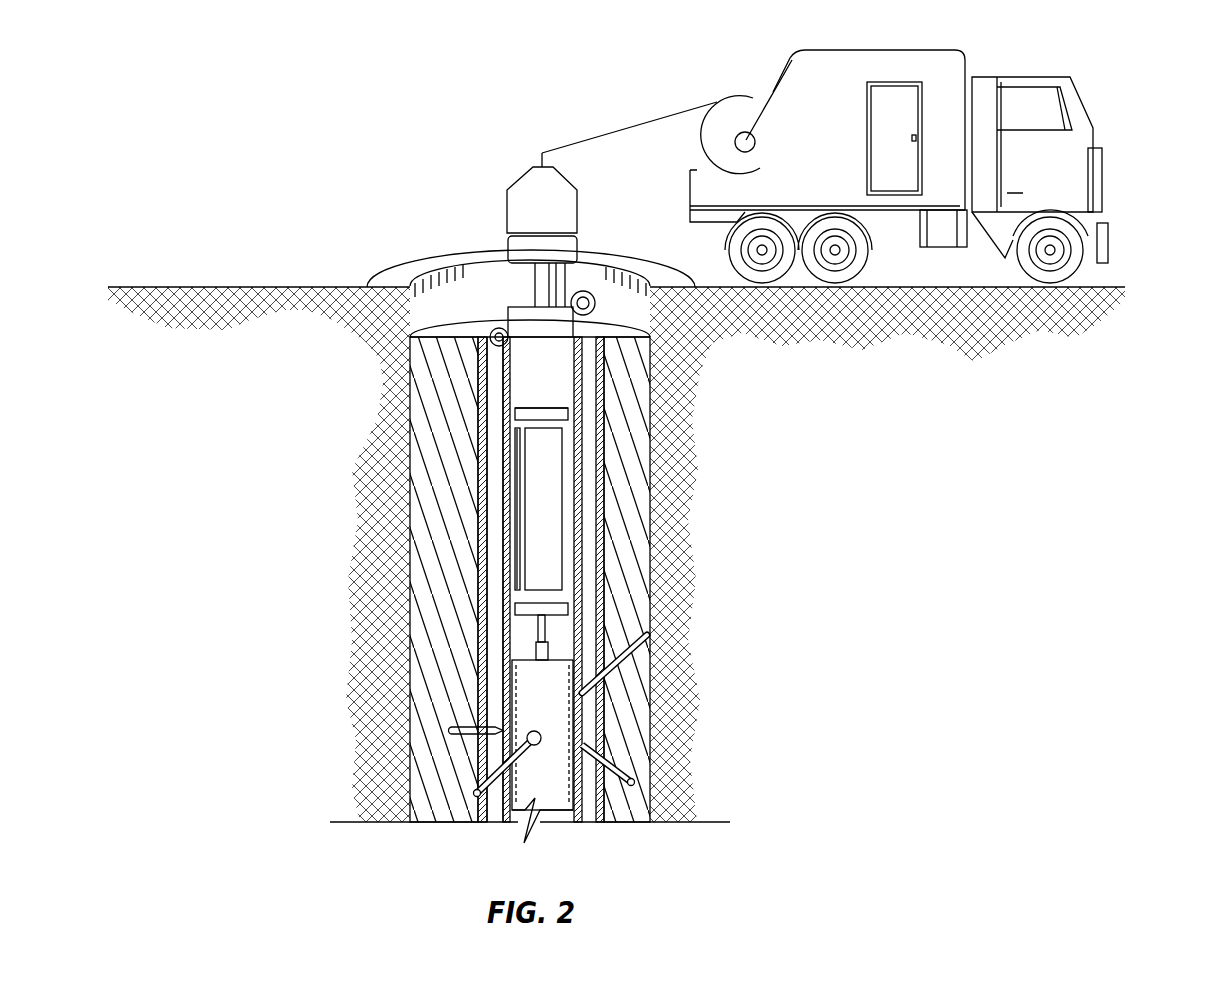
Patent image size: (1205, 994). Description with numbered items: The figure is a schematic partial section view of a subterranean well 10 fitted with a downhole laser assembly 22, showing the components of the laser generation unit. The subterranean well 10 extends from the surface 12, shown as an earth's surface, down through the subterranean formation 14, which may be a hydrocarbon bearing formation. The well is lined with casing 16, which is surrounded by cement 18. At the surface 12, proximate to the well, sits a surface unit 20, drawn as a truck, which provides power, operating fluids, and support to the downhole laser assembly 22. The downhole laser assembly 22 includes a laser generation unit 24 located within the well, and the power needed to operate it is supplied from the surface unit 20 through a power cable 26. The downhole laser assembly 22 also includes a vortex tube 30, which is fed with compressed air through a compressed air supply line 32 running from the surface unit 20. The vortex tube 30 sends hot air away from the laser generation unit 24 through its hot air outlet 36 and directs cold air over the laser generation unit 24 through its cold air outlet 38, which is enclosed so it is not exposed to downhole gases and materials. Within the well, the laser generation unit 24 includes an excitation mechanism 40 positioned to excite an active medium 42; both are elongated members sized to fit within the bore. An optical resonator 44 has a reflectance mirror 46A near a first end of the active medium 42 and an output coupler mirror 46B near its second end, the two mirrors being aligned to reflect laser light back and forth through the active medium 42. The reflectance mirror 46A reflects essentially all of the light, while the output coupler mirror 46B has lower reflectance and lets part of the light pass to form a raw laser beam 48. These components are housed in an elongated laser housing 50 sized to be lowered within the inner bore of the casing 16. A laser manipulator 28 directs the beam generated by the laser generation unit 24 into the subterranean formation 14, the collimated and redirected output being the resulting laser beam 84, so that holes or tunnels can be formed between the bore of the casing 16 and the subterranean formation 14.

The subterranean well 10 is at (408, 750).
The surface 12 is at (260, 287).
The subterranean formation 14 is at (975, 362).
The casing 16 is at (607, 603).
The cement 18 is at (650, 575).
The surface unit 20 is at (1057, 76).
The downhole laser assembly 22 is at (493, 652).
The laser generation unit 24 is at (582, 512).
The power cable 26 is at (515, 273).
The laser manipulator 28 is at (520, 718).
The vortex tube 30 is at (578, 326).
The compressed air supply line 32 is at (535, 276).
The hot air outlet 36 is at (596, 300).
The cold air outlet 38 is at (487, 329).
The excitation mechanism 40 is at (518, 521).
The active medium 42 is at (550, 560).
The optical resonator 44 is at (570, 415).
The reflectance mirror 46A is at (525, 409).
The output coupler mirror 46B is at (516, 608).
The raw laser beam 48 is at (615, 655).
The laser housing 50 is at (515, 466).
The resulting laser beam 84 is at (547, 632).